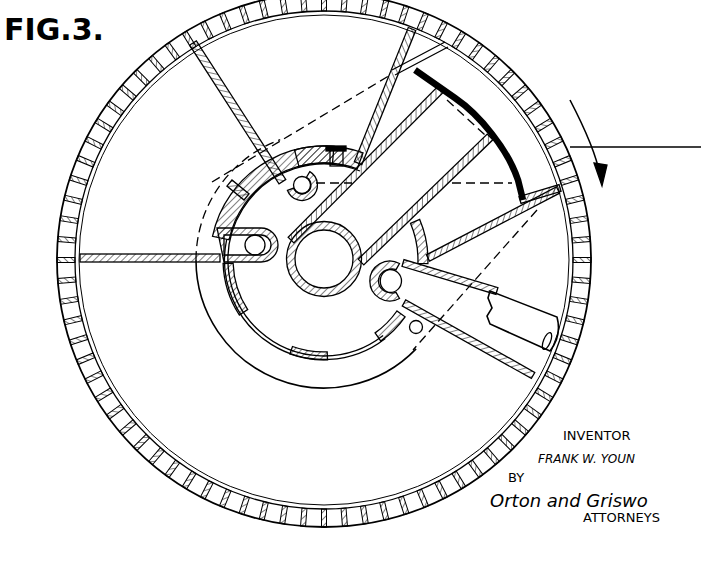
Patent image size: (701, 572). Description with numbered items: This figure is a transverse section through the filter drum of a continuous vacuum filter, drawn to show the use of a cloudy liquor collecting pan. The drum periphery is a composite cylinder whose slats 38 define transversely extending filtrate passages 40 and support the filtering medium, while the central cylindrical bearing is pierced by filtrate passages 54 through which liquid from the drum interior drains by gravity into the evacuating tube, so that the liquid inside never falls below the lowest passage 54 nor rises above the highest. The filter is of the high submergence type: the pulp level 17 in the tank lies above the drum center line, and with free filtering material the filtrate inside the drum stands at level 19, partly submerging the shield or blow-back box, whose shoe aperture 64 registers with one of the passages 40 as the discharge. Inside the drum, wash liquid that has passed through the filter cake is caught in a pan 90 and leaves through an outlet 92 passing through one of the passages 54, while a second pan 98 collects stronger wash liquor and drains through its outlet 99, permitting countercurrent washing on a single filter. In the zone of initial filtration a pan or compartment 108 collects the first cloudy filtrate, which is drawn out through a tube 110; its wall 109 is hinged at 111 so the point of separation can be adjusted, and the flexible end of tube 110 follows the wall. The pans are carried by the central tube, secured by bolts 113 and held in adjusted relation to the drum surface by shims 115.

The pulp level 17 is at (635, 146).
The filtrate level 19 is at (463, 183).
The slats 38 is at (592, 249).
The filtrate passages 40 is at (474, 50).
The filtrate passages 54 is at (272, 170).
The aperture 64 is at (516, 72).
The pan 90 is at (216, 80).
The outlet 92 is at (294, 190).
The pan 98 is at (116, 254).
The outlet 99 is at (257, 256).
The pan or compartment 108 is at (489, 219).
The wall 109 is at (496, 364).
The tube 110 is at (480, 297).
The hinge 111 is at (425, 335).
The bolts 113 is at (339, 147).
The shims 115 is at (318, 146).